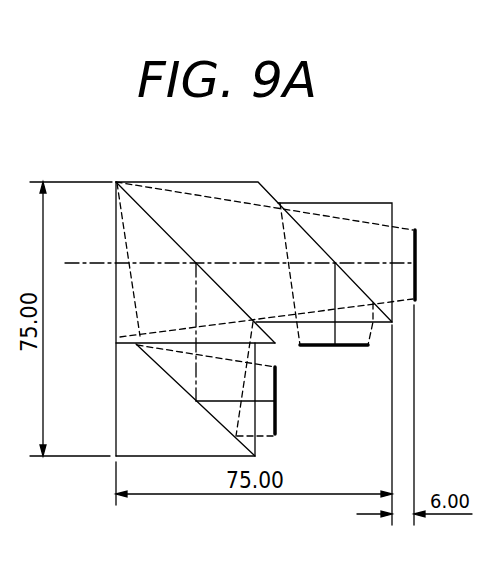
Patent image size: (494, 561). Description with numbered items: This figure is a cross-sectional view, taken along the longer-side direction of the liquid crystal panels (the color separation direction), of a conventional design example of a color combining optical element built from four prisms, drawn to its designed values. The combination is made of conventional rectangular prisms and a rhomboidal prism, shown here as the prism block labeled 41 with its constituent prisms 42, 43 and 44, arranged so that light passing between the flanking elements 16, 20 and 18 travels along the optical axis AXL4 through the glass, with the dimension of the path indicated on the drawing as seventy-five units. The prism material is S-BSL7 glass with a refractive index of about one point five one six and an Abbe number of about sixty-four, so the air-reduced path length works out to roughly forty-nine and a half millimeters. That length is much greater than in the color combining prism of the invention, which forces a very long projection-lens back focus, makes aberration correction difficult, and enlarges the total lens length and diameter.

The optical axis AXL4 is at (100, 262).
The composite prism 41 is at (116, 289).
The lower prism 42 is at (178, 384).
The upper prism 43 is at (195, 182).
The exit prism 44 is at (333, 203).
The light source 16 is at (278, 420).
The exit window 18 is at (418, 296).
The photodetector 20 is at (322, 347).